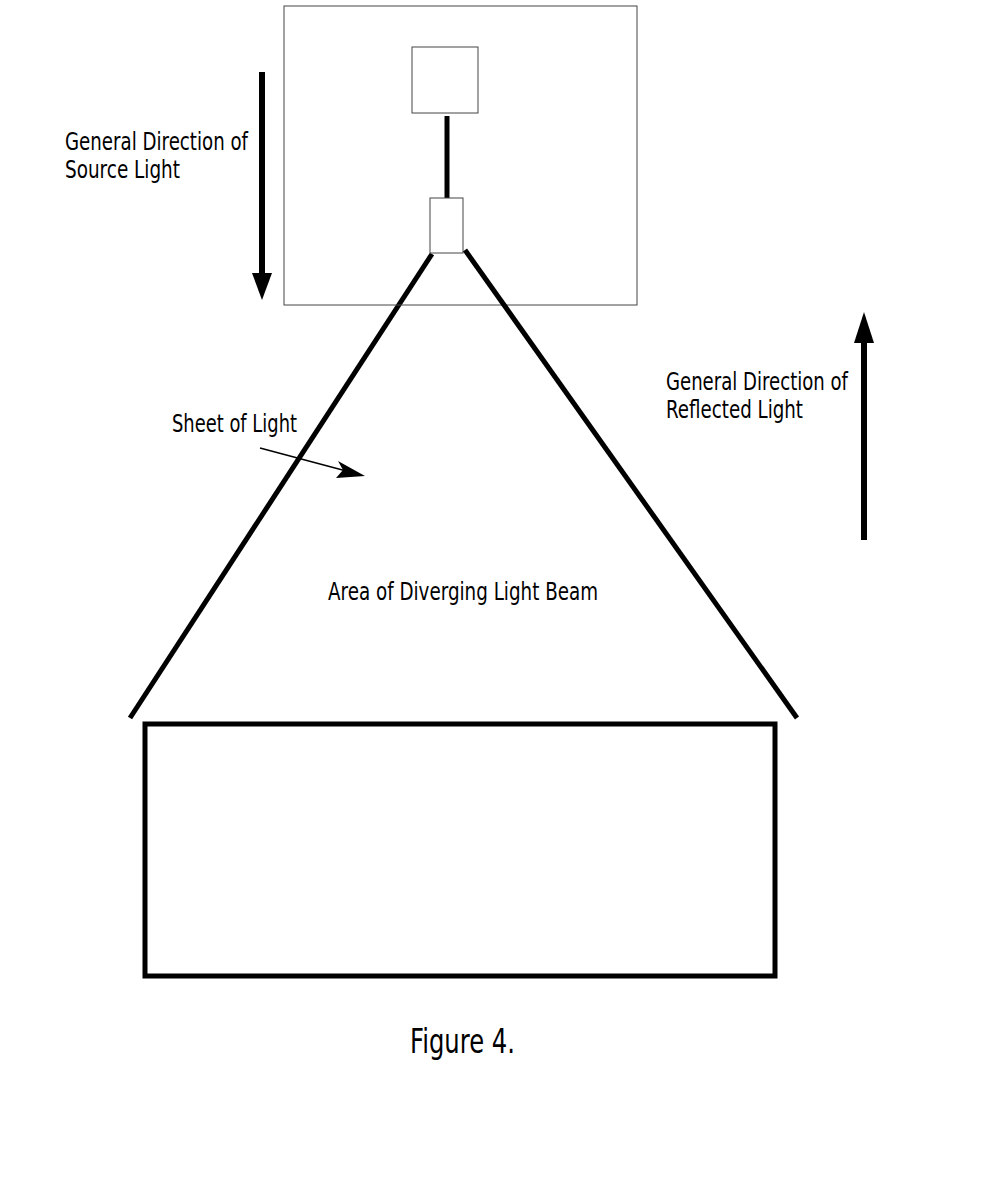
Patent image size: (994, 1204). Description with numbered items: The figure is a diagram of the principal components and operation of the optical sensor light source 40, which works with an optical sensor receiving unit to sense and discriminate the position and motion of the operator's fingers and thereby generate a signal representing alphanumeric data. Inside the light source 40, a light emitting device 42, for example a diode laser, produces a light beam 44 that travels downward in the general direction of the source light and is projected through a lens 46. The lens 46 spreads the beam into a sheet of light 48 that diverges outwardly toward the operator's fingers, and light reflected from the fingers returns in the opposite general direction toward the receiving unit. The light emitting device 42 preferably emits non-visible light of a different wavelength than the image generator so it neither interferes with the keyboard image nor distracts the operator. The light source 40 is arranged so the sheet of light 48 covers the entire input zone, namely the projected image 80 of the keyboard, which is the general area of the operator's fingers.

The optical sensor light source 40 is at (637, 95).
The light emitting device 42 is at (478, 85).
The light beam 44 is at (450, 155).
The lens 46 is at (463, 215).
The sheet of light 48 is at (638, 536).
The projected image 80 is at (460, 850).